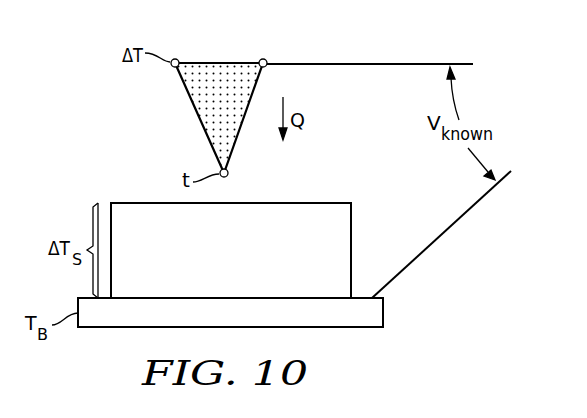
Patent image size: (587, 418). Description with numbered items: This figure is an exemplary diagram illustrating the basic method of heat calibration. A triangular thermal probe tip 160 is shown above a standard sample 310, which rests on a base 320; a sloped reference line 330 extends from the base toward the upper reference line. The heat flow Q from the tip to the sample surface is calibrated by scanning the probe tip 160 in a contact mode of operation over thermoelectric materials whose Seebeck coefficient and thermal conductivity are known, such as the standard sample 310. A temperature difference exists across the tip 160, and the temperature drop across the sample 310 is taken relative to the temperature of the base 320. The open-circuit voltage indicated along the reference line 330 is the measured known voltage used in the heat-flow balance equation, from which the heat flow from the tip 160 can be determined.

The thermal probe / sensing element 160 is at (218, 62).
The standard sample 310 is at (317, 201).
The base 320 is at (385, 315).
The reference line for known velocity 330 is at (440, 237).